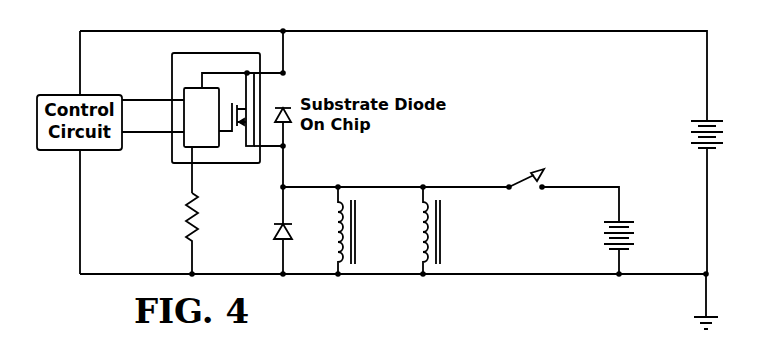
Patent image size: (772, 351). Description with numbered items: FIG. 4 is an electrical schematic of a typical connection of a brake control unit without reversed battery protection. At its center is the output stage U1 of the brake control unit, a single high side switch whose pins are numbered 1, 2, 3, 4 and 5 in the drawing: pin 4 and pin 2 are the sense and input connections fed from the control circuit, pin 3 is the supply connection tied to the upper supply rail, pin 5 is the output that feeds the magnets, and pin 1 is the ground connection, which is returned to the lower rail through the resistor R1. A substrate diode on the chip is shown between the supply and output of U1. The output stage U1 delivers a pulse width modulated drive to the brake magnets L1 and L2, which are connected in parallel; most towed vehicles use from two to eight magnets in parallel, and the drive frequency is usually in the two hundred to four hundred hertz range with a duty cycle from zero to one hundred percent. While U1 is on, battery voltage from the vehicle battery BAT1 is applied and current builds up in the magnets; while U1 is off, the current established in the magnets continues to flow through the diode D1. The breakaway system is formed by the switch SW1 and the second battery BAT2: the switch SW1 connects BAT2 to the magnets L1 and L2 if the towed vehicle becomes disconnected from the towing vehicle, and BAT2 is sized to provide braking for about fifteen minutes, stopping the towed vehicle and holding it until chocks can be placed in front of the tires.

The Gnd pin of U1 1 is at (185, 170).
The In pin of U1 2 is at (153, 126).
The Vcc pin of U1 3 is at (271, 64).
The Is pin of U1 4 is at (153, 94).
The Out pin of U1 5 is at (271, 139).
The output stage U1 is at (226, 99).
The resistor 470 ohm R1 is at (207, 233).
The diode D1 is at (291, 230).
The brake magnet L1 is at (371, 230).
The brake magnet L2 is at (456, 230).
The switch SW1 is at (526, 201).
The 12.6V battery BAT1 is at (688, 126).
The breakaway battery BAT2 is at (598, 231).